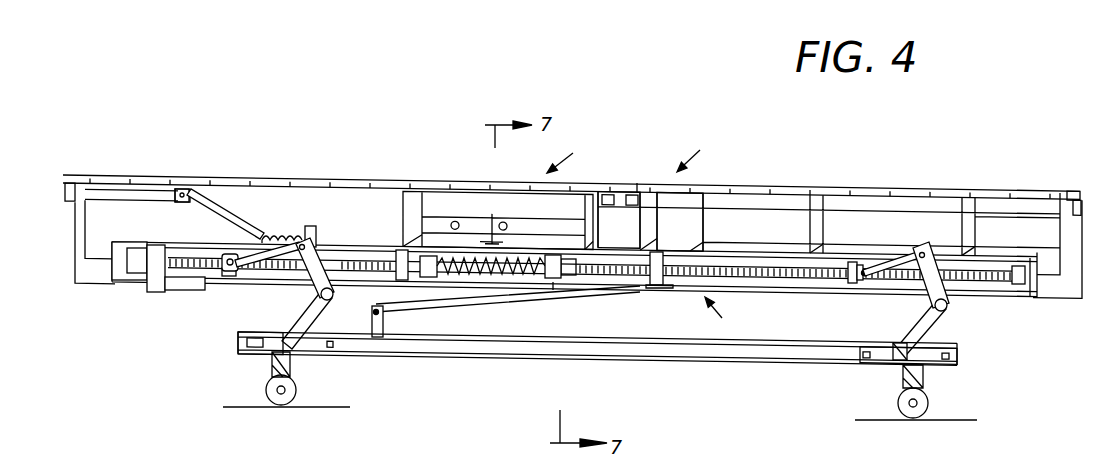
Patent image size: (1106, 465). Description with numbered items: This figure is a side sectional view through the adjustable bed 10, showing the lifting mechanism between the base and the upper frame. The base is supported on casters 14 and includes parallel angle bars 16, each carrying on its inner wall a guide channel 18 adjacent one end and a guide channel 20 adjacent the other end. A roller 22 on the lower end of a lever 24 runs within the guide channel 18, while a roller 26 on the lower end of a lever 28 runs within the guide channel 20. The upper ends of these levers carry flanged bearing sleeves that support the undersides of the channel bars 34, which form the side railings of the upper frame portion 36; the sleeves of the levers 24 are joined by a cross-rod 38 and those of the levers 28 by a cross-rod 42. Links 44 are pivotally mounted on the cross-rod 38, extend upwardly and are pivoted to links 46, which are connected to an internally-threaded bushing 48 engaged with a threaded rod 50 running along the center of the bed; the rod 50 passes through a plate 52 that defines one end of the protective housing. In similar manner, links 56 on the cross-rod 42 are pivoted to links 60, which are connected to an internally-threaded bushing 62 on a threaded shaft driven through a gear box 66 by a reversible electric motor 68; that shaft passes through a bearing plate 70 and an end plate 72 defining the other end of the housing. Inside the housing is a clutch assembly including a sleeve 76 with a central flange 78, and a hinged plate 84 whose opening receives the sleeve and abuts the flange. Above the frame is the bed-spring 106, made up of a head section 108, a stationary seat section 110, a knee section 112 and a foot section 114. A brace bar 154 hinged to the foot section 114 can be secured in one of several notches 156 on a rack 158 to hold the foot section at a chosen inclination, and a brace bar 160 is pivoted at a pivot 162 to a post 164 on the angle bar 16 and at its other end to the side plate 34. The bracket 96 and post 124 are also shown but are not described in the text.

The bed 10 is at (703, 158).
The casters 14 is at (297, 392).
The angle bars 16 is at (598, 355).
The guide channel 18 is at (880, 360).
The guide channel 20 is at (263, 345).
The roller 22 is at (900, 343).
The lever 24 is at (920, 323).
The roller 26 is at (315, 320).
The lever 28 is at (298, 320).
The channel bars 34 is at (747, 258).
The upper frame portion 36 is at (728, 316).
The cross-rod 38 is at (950, 312).
The cross-rod 42 is at (334, 295).
The links 44 is at (958, 258).
The links 46 is at (904, 253).
The internally-threaded bushing 48 is at (865, 270).
The threaded rod 50 is at (766, 292).
The plate 52 is at (657, 293).
The links 56 is at (279, 268).
The links 60 is at (252, 272).
The internally-threaded bushing 62 is at (226, 276).
The gear box 66 is at (153, 248).
The reversible electric motor 68 is at (187, 292).
The bearing plate 70 is at (393, 252).
The end plate 72 is at (413, 304).
The sleeve 76 is at (537, 285).
The central flange 78 is at (565, 290).
The plate 84 is at (555, 283).
The bracket 96 is at (568, 262).
The bed-spring 106 is at (580, 159).
The head section 108 is at (890, 190).
The seat section 110 is at (637, 182).
The knee section 112 is at (457, 192).
The foot section 114 is at (292, 160).
The post 124 is at (704, 223).
The brace bar 154 is at (213, 212).
The notches 156 is at (277, 233).
The rack 158 is at (317, 237).
The brace bar 160 is at (475, 305).
The pivot 162 is at (402, 358).
The post 164 is at (380, 318).